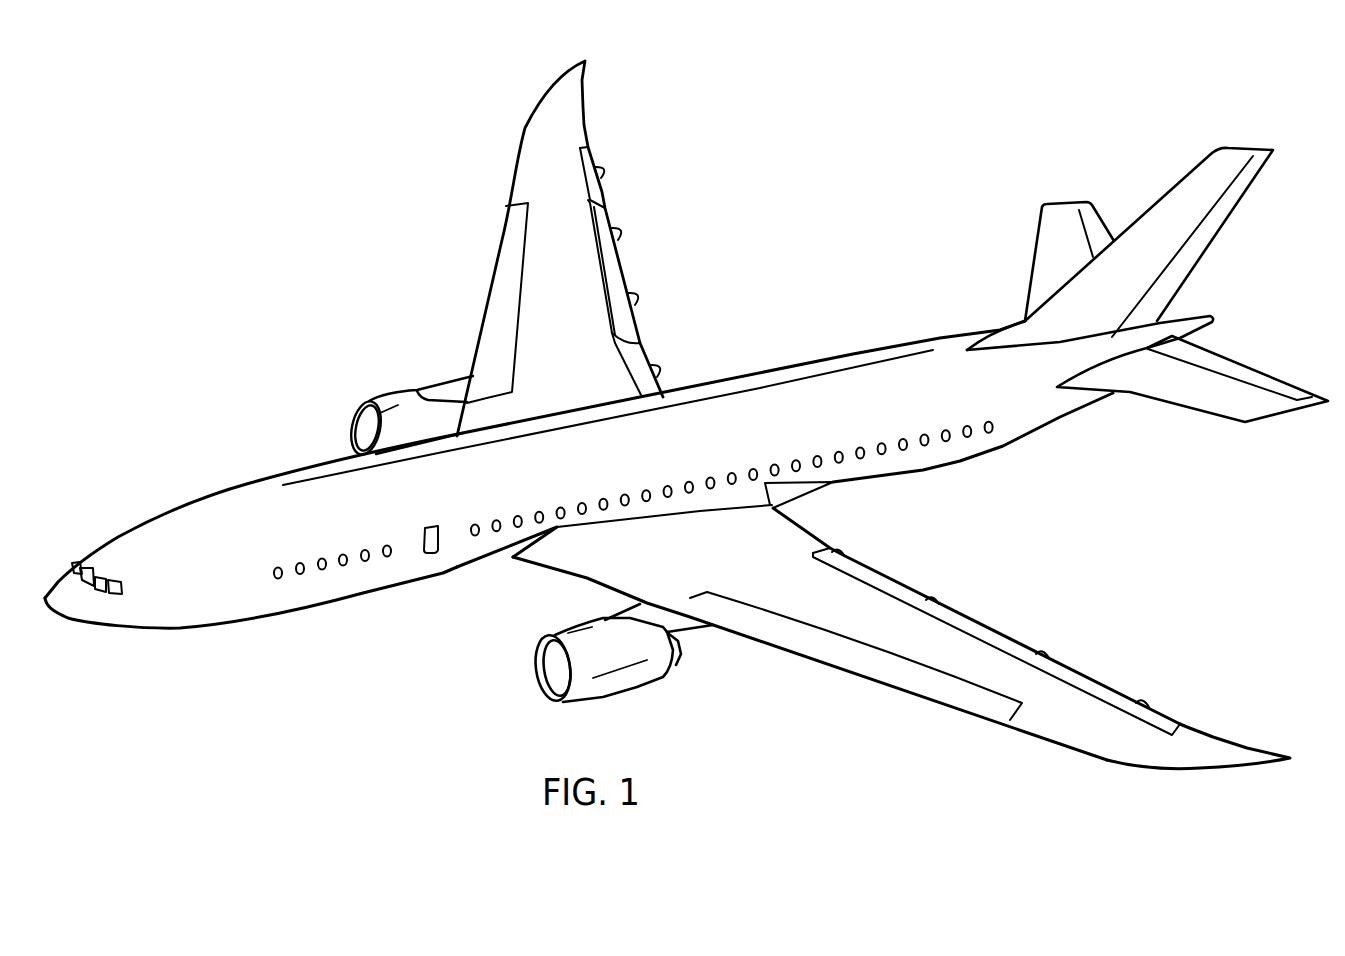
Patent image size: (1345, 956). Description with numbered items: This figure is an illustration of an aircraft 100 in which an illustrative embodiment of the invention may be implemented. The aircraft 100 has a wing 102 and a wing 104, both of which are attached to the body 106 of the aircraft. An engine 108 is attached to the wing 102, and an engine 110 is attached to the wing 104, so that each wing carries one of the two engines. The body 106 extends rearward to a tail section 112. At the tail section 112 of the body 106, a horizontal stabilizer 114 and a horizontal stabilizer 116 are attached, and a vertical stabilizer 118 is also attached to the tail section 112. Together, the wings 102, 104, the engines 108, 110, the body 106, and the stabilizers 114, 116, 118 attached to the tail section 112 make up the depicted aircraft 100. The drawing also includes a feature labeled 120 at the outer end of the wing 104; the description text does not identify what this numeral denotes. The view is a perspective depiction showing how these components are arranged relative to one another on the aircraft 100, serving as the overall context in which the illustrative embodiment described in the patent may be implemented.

The aircraft 100 is at (305, 203).
The wing 102 is at (583, 95).
The wing 104 is at (1140, 767).
The body 106 is at (217, 488).
The engine 108 is at (390, 390).
The engine 110 is at (618, 693).
The tail section 112 is at (1101, 447).
The horizontal stabilizer 114 is at (1034, 258).
The horizontal stabilizer 116 is at (1197, 410).
The vertical stabilizer 118 is at (1225, 232).
The winglet 120 is at (1268, 737).